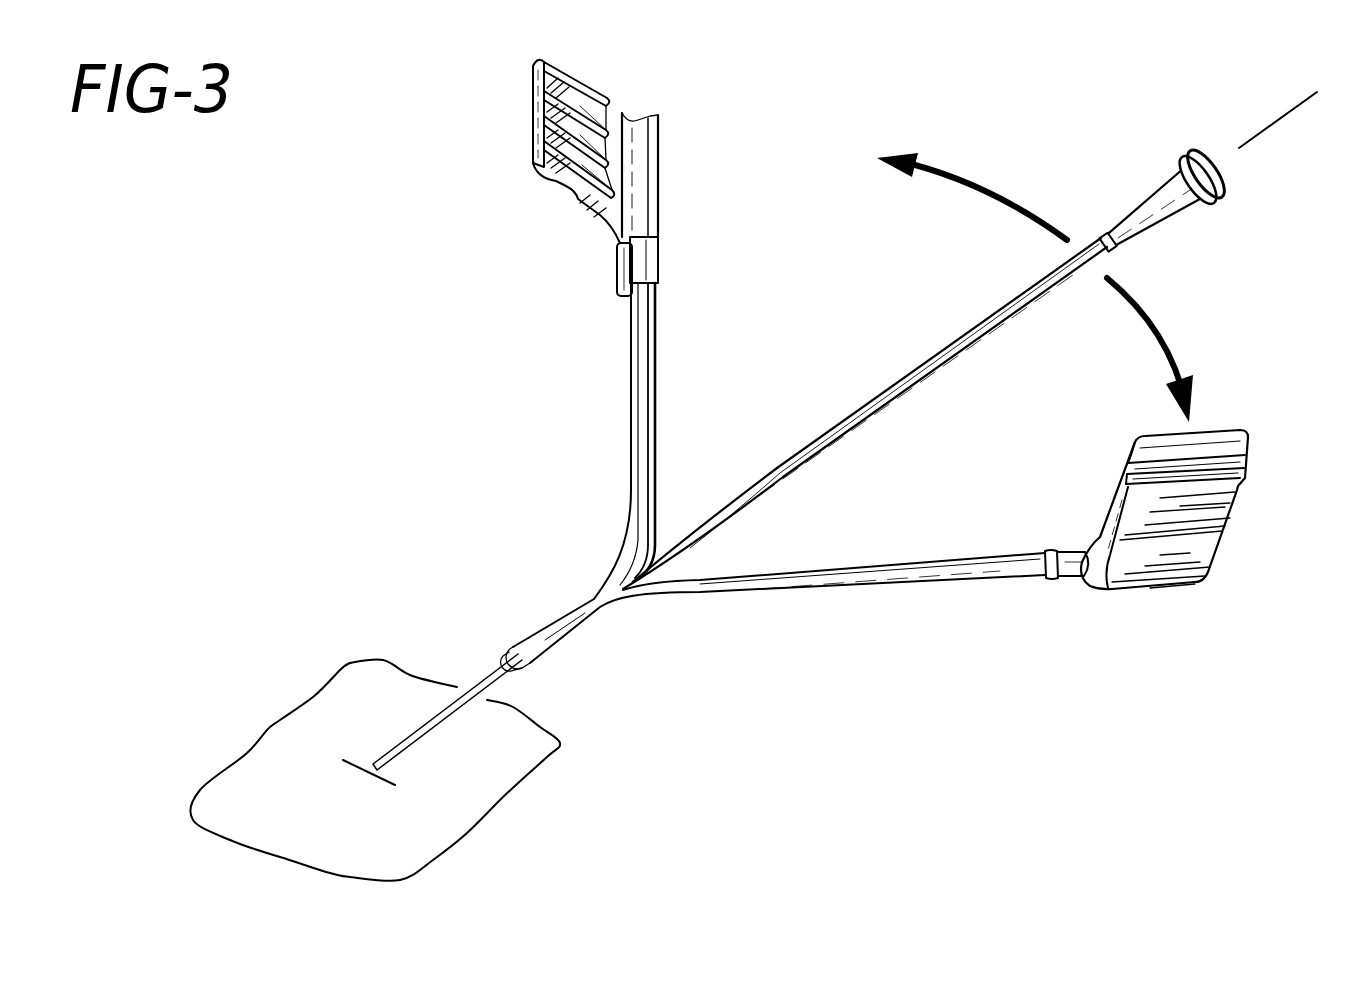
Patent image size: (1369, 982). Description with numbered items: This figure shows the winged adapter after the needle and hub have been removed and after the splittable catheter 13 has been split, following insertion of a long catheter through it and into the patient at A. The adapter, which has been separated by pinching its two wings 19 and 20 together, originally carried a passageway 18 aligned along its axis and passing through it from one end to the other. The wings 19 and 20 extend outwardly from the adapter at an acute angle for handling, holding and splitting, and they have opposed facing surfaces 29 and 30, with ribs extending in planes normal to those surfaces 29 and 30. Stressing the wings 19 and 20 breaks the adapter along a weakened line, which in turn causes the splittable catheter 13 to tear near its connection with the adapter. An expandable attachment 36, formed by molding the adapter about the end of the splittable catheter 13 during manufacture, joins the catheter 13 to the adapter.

The splittable catheter 13 is at (577, 623).
The passageway 18 is at (643, 270).
The wing 19 is at (533, 118).
The wing 20 is at (1247, 457).
The opposed facing surface 29 is at (593, 152).
The opposed facing surface 30 is at (1100, 515).
The expandable attachment 36 is at (625, 285).
The placement site in the body A is at (362, 778).